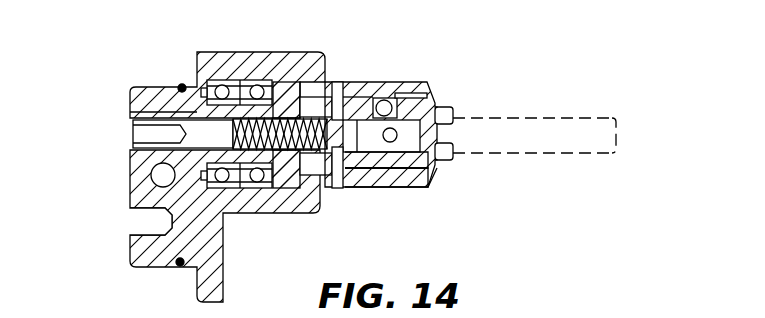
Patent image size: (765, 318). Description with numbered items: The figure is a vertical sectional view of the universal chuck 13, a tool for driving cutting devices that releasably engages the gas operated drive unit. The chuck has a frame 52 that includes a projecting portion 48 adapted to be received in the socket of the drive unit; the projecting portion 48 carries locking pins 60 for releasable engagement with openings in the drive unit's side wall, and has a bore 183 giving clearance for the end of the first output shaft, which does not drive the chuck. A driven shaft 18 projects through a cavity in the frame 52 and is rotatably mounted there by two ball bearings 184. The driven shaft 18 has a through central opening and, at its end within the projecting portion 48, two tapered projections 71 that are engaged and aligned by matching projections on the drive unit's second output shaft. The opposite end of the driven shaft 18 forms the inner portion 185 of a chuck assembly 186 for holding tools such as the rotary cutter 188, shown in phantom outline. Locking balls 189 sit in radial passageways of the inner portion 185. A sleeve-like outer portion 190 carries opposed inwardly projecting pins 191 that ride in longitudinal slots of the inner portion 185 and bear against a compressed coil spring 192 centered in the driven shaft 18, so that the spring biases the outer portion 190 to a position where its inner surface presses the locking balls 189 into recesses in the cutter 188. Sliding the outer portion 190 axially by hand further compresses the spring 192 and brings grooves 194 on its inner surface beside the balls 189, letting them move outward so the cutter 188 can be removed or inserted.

The universal chuck 13 is at (368, 73).
The driven shaft 18 is at (288, 98).
The projecting portion 48 is at (147, 92).
The frame 52 is at (220, 278).
The locking pins 60 is at (158, 177).
The tapered projections 71 is at (131, 120).
The bore 183 is at (135, 229).
The ball bearings 184 is at (247, 86).
The inner portion 185 is at (396, 172).
The chuck assembly 186 is at (427, 187).
The rotary cutter 188 is at (578, 114).
The locking balls 189 is at (392, 127).
The sleeve-like outer portion 190 is at (379, 175).
The pins 191 is at (339, 84).
The compressed coil spring 192 is at (292, 152).
The grooves 194 is at (434, 99).